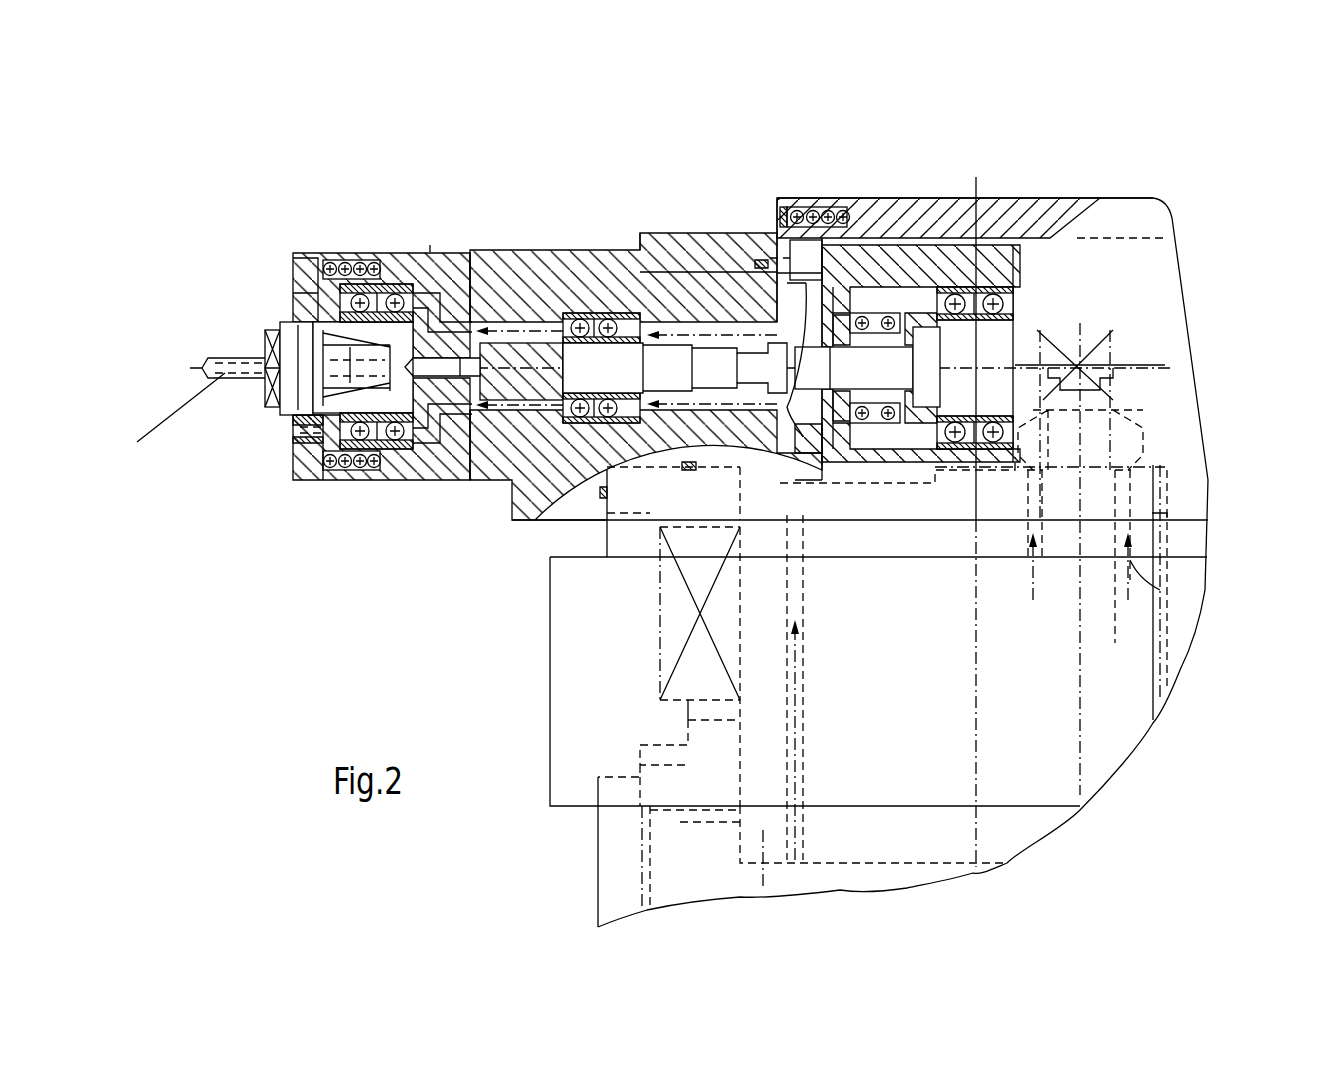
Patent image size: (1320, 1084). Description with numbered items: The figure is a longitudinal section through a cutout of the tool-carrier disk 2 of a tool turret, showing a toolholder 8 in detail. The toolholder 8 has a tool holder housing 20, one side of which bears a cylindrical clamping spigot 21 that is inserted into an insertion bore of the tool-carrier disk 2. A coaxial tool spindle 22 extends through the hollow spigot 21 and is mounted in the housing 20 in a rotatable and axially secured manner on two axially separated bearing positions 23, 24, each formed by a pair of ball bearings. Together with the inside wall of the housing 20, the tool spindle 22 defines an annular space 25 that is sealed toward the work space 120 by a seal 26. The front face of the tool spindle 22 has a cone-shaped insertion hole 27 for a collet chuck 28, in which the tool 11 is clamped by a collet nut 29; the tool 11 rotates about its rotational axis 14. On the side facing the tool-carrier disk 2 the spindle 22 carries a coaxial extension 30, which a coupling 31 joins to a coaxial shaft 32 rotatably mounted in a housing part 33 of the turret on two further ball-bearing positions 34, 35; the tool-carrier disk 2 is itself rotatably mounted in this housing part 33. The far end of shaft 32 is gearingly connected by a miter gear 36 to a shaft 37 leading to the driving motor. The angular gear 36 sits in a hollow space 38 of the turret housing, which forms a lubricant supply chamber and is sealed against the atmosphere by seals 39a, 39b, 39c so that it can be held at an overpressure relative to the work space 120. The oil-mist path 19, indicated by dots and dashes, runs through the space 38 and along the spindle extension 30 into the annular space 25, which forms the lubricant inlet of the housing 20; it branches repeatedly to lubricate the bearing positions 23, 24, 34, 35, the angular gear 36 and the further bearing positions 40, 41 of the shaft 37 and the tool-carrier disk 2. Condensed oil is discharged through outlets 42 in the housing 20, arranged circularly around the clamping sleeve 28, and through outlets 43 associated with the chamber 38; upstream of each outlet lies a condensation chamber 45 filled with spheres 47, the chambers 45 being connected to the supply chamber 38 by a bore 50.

The tool-carrier disk 2 is at (605, 250).
The toolholder 8 is at (440, 240).
The tool 11 is at (166, 415).
The rotational axis 14 is at (486, 423).
The oil-mist path 19 is at (1163, 710).
The tool holder housing 20 is at (415, 470).
The cylindrical clamping spigot 21 is at (537, 300).
The tool spindle 22 is at (405, 445).
The bearing position 23 is at (290, 475).
The bearing position 24 is at (662, 250).
The annular space 25 is at (497, 258).
The seal 26 is at (311, 255).
The cone-shaped insertion hole 27 is at (262, 407).
The collet chuck 28 is at (277, 320).
The collet nut 29 is at (250, 332).
The coaxial extension 30 is at (798, 207).
The coupling 31 is at (837, 280).
The coaxial shaft 32 is at (855, 420).
The housing part 33 is at (943, 275).
The bearing position 34 is at (880, 430).
The bearing position 35 is at (1033, 253).
The miter gear 36 is at (1117, 398).
The shaft 37 is at (1090, 617).
The hollow space 38 is at (1035, 252).
The seal 39a is at (727, 357).
The seal 39b is at (660, 528).
The seal 39c is at (580, 520).
The bearing position 40 is at (1128, 495).
The bearing position 41 is at (798, 572).
The outlet 42 is at (366, 262).
The outlet 43 is at (805, 235).
The chamber 45 is at (430, 245).
The sphere 47 is at (338, 258).
The bore 50 is at (827, 247).
The work space 120 is at (247, 255).